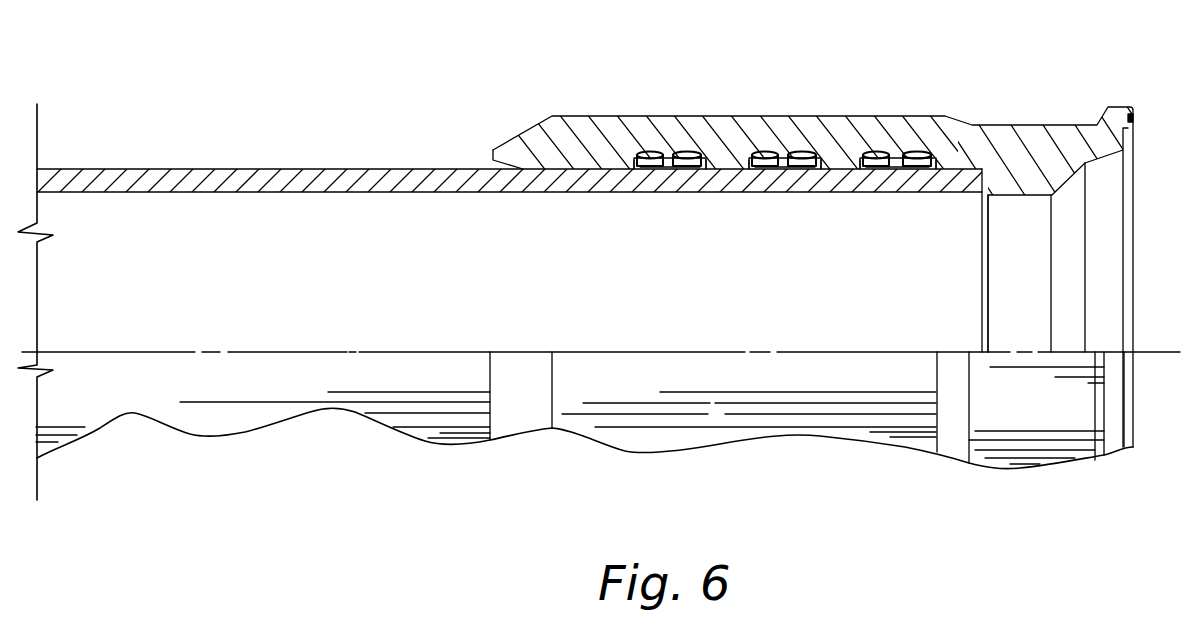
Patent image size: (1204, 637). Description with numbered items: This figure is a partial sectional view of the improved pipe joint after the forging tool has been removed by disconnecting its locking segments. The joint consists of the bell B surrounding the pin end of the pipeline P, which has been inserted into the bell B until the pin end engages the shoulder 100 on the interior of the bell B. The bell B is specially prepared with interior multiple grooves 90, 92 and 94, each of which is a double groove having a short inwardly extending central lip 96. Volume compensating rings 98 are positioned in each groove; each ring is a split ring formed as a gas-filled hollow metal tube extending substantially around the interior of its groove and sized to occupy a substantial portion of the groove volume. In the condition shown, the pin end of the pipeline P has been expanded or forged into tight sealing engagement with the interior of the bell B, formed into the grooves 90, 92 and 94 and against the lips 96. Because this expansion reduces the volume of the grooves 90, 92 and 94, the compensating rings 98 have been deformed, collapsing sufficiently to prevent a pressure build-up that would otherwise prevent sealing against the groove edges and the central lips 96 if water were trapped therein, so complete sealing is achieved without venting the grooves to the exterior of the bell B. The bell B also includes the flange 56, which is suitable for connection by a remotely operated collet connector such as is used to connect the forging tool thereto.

The pipeline P is at (182, 169).
The bell B is at (1048, 124).
The flange 56 is at (1122, 107).
The volume compensating rings 98 is at (687, 152).
The central lip 96 is at (665, 168).
The groove 90 is at (695, 168).
The groove 92 is at (770, 170).
The groove 94 is at (875, 168).
The shoulder 100 is at (980, 172).